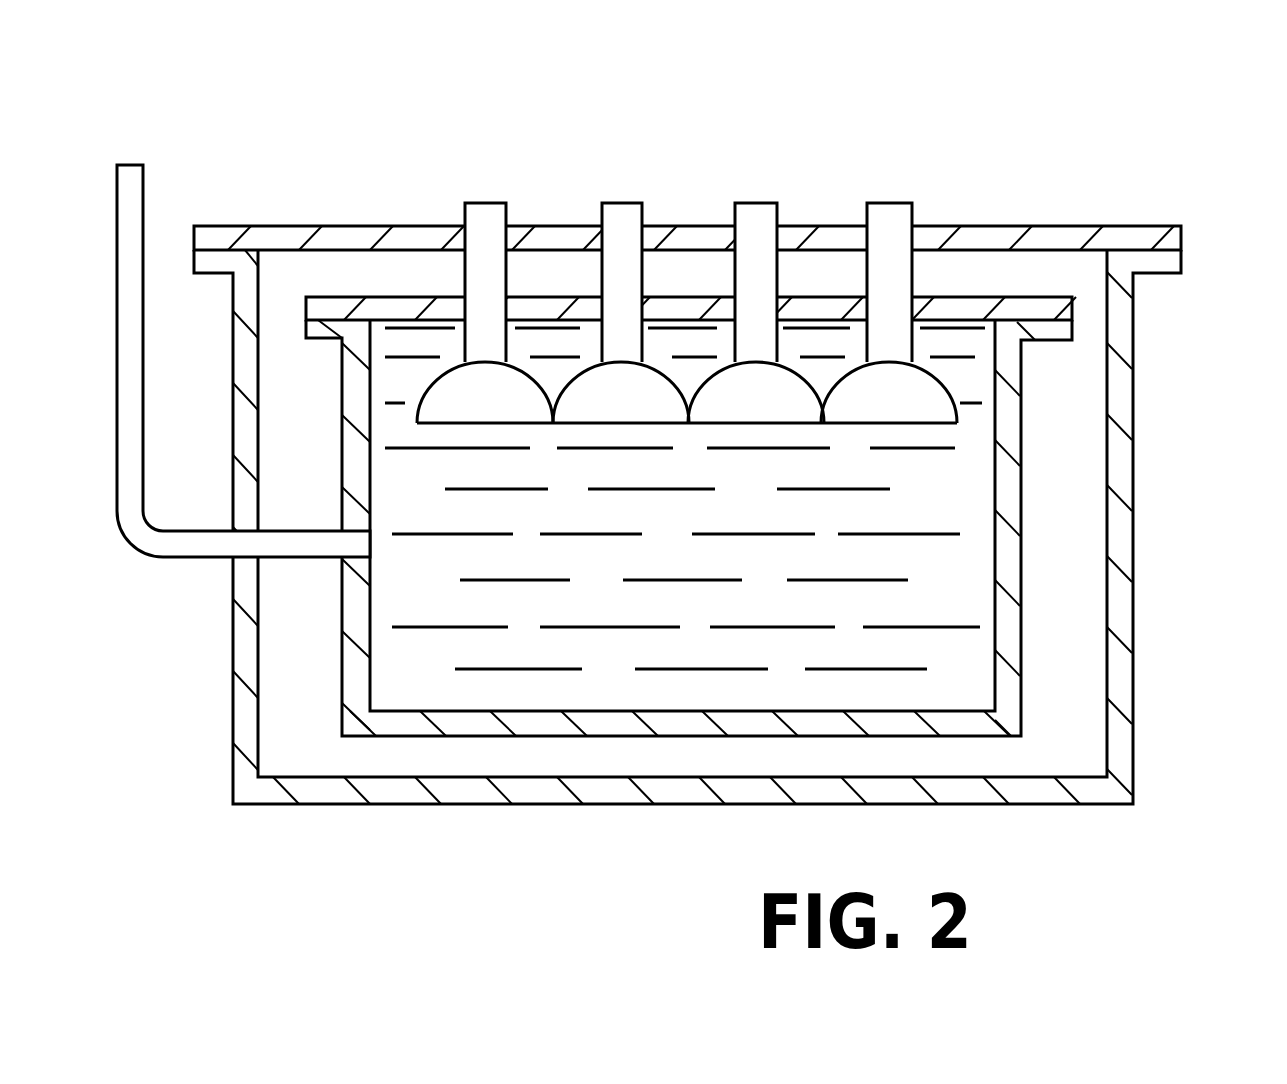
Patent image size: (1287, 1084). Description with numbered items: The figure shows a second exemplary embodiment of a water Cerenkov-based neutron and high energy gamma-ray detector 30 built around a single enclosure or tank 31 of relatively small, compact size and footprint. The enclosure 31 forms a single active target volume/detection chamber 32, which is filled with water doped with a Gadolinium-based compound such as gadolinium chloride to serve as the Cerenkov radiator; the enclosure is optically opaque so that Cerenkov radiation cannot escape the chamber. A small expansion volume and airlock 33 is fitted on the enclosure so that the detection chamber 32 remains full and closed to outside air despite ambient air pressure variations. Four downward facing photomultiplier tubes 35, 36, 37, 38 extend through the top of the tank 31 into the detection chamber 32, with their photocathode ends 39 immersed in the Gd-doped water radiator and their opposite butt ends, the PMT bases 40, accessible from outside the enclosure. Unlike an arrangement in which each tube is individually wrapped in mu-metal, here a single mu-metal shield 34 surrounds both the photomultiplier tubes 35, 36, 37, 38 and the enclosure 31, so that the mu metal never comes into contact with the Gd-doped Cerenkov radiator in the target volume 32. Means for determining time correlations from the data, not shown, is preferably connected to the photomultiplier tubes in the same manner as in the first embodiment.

The water Cerenkov-based neutron and high energy gamma-ray detector 30 is at (681, 426).
The enclosure 31 is at (1022, 575).
The target volume/detection chamber 32 is at (963, 512).
The expansion volume and airlock 33 is at (147, 200).
The mu-metal shield 34 is at (1133, 483).
The photomultiplier tube 35 is at (482, 287).
The photomultiplier tube 36 is at (622, 290).
The photomultiplier tube 37 is at (758, 287).
The photomultiplier tube 38 is at (885, 280).
The photocathode ends 39 is at (515, 408).
The butt ends (PMT bases) 40 is at (661, 231).